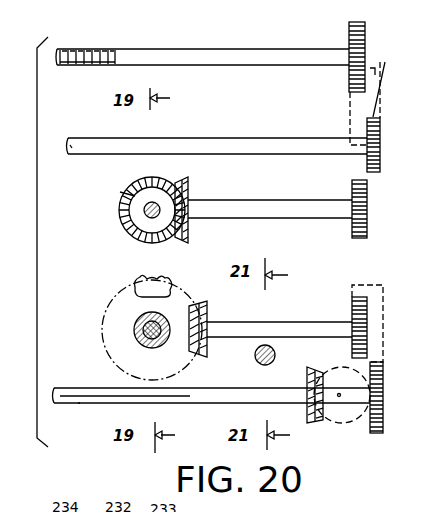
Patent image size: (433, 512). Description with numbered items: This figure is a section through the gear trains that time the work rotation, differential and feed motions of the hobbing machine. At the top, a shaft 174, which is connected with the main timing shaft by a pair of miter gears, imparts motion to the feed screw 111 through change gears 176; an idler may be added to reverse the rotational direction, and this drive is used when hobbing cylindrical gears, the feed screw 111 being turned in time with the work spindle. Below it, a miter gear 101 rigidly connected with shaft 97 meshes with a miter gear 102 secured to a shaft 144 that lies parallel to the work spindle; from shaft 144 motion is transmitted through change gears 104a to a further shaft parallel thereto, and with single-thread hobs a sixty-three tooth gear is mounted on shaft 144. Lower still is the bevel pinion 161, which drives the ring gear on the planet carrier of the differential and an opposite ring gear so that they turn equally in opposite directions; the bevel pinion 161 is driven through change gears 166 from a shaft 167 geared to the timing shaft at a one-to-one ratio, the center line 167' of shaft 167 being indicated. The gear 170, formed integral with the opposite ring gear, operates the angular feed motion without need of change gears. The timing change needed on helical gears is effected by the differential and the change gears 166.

The feed screw 111 is at (150, 54).
The change gears 176 is at (365, 62).
The shaft 174 is at (310, 142).
The miter gear 101 is at (135, 194).
The shaft 97 is at (145, 208).
The miter gear 102 is at (188, 190).
The shaft 144 is at (284, 217).
The change gears 104a is at (362, 234).
The gear 170 is at (165, 282).
The bevel pinion 161 is at (207, 320).
The change gears 166 is at (385, 374).
The shaft 167 is at (212, 390).
The center line 167' is at (77, 416).